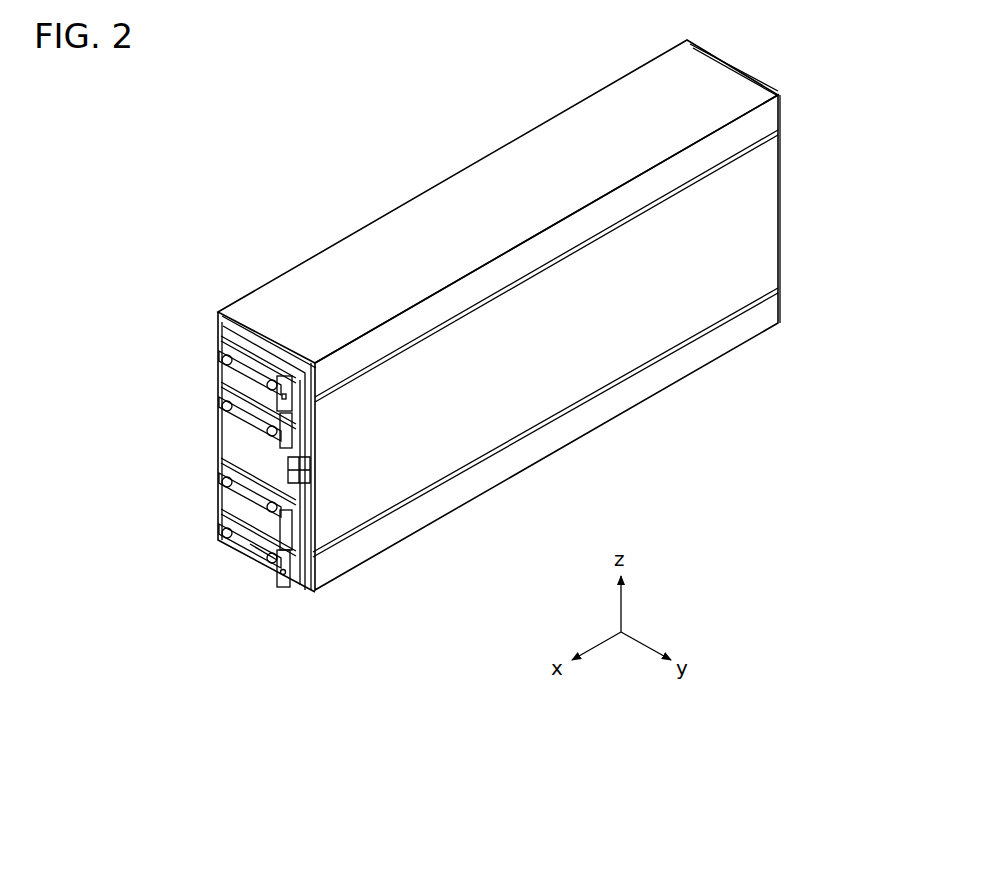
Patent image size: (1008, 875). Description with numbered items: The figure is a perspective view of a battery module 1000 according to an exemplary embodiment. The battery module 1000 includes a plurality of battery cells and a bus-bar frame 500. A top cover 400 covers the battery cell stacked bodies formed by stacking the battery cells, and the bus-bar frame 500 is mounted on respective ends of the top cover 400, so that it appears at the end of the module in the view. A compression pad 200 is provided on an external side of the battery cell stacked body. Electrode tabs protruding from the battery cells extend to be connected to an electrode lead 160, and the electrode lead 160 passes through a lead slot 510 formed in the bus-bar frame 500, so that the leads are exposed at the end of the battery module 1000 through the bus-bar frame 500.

The battery module 1000 is at (412, 168).
The compression pad 200 is at (553, 142).
The top cover 400 is at (570, 378).
The bus-bar frame 500 is at (192, 380).
The lead slot 510 is at (226, 500).
The electrode lead 160 is at (250, 544).